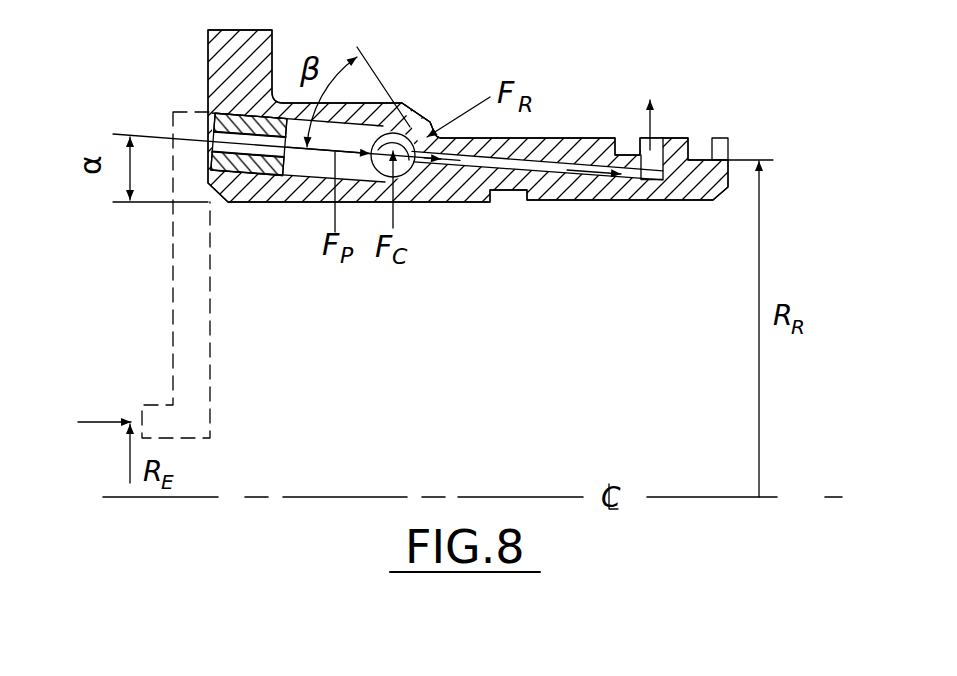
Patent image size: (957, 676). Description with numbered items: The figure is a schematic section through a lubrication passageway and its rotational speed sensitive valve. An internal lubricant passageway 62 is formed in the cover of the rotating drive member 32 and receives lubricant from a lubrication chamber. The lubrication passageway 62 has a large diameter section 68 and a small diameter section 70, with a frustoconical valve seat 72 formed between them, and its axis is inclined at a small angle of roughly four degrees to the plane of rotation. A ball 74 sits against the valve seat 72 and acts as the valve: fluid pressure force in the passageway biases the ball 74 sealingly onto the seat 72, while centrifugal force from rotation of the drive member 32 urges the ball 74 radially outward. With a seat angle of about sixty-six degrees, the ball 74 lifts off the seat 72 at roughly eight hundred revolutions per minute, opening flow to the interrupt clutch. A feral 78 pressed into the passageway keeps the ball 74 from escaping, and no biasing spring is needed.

The drive member 32 is at (644, 207).
The internal lubricant passageway 62 is at (303, 166).
The large diameter section 68 is at (318, 172).
The small diameter section 70 is at (537, 162).
The frustoconical valve seat 72 is at (430, 118).
The ball 74 is at (407, 133).
The feral 78 is at (228, 110).